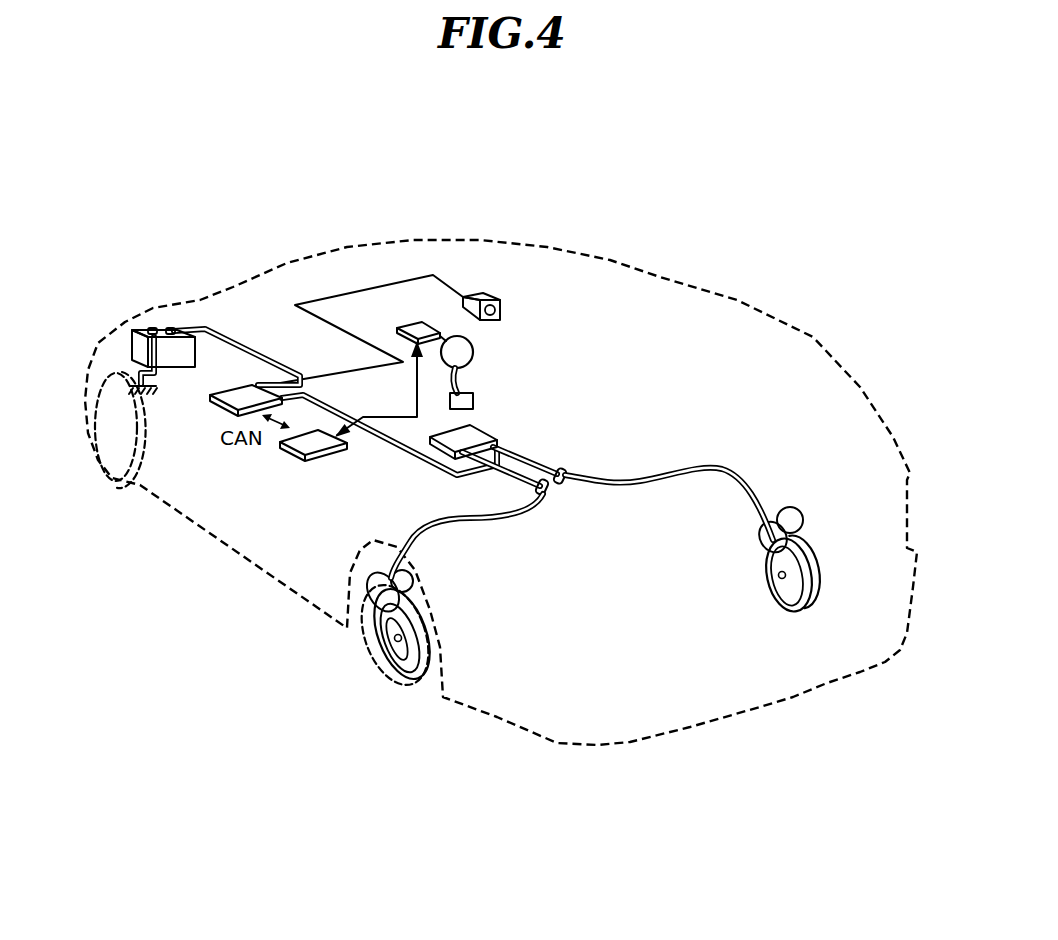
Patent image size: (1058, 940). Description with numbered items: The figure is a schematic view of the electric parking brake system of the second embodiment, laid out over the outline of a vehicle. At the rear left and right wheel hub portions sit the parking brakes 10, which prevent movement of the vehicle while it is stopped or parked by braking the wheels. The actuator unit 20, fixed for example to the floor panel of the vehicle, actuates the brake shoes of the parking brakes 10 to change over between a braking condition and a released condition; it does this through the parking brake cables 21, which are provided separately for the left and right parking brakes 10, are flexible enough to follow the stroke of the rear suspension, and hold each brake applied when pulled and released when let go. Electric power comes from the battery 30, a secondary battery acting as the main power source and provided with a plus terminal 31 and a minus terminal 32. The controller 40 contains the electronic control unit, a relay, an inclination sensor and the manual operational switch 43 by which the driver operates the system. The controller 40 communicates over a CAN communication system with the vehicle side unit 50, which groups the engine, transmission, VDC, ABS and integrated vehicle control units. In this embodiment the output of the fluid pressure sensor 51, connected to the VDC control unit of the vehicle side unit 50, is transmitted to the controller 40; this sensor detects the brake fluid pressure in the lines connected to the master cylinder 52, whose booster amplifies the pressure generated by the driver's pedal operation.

The parking brake 10 is at (402, 639).
The actuator unit 20 is at (473, 427).
The parking brake cable 21 is at (484, 510).
The battery 30 is at (140, 347).
The plus terminal 31 is at (170, 327).
The minus terminal 32 is at (153, 327).
The controller 40 is at (210, 397).
The manual operational switch 43 is at (481, 293).
The vehicle side unit 50 is at (280, 451).
The fluid pressure sensor 51 is at (413, 325).
The master cylinder 52 is at (472, 344).